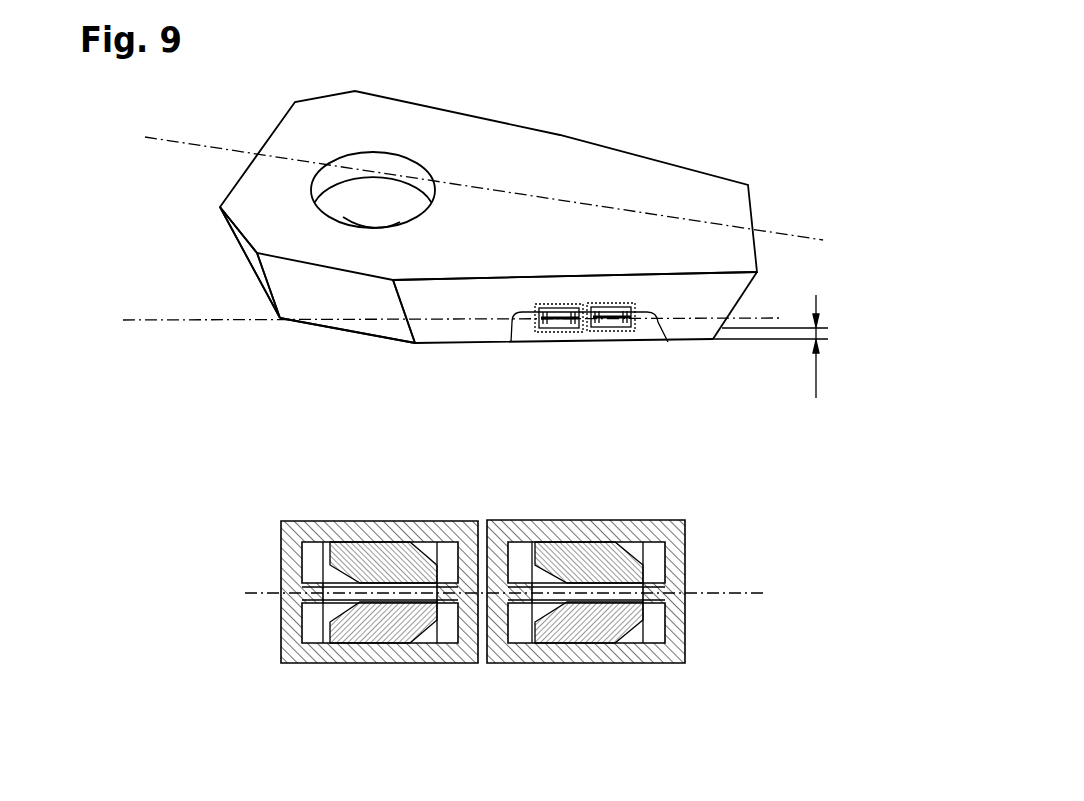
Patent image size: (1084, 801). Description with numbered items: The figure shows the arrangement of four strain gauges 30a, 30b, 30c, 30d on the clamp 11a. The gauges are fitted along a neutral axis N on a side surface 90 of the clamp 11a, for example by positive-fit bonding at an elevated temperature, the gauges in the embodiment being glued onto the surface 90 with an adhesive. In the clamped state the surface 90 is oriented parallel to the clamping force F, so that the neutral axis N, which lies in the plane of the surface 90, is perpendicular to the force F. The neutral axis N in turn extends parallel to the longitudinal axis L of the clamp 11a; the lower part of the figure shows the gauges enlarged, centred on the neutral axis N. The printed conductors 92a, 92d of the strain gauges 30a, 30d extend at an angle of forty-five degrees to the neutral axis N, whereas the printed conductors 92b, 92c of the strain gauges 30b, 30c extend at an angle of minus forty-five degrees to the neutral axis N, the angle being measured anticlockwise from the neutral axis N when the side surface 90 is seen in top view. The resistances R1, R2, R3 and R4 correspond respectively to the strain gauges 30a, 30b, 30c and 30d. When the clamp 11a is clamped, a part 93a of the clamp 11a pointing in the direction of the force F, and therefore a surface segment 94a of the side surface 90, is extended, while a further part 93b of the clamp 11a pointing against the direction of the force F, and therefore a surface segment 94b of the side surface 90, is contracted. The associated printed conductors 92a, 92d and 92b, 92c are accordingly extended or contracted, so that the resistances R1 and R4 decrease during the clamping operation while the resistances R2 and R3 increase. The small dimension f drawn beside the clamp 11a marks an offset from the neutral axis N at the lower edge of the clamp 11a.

The clamp 11a is at (763, 135).
The side surface 90 is at (675, 290).
The surface segment 94a is at (428, 338).
The surface segment 94b is at (466, 292).
The part of the clamp 93a is at (381, 334).
The further part of the clamp 93b is at (316, 298).
The strain gauge 30a is at (557, 329).
The strain gauge 30b is at (512, 345).
The strain gauge 30c is at (668, 345).
The strain gauge 30d is at (610, 330).
The printed conductor 92a is at (348, 640).
The printed conductor 92b is at (348, 548).
The printed conductor 92c is at (556, 548).
The printed conductor 92d is at (556, 640).
The resistance R1 is at (377, 685).
The resistance R2 is at (377, 503).
The resistance R3 is at (583, 503).
The resistance R4 is at (583, 685).
The longitudinal axis L is at (213, 147).
The neutral axis N is at (198, 320).
The clamping force F is at (108, 284).
The offset distance f is at (775, 346).